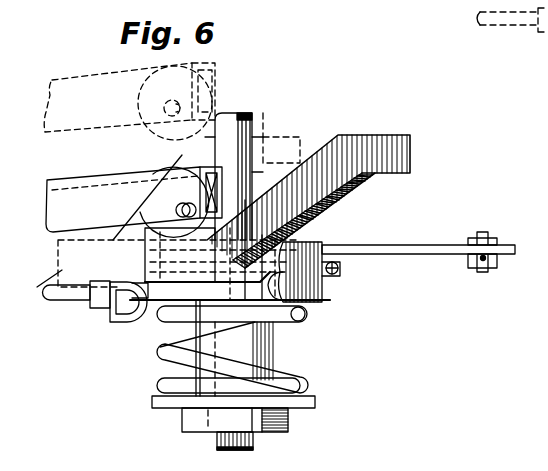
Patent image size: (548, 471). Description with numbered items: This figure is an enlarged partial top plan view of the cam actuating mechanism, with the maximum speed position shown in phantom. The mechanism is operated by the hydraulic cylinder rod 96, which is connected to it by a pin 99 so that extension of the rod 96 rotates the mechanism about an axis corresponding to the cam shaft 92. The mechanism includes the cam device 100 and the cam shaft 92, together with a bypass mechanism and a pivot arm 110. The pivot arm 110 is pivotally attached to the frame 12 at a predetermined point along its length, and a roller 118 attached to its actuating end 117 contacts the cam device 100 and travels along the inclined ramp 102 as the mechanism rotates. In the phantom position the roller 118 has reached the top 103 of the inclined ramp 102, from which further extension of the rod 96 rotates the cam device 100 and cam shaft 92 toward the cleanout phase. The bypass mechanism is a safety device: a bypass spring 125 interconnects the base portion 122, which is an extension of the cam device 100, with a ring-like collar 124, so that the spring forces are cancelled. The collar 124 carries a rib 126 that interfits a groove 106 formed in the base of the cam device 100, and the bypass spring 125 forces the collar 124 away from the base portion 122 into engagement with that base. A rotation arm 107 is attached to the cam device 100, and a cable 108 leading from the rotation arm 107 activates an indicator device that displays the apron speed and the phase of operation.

The frame 12 is at (539, 118).
The cam shaft 92 is at (246, 449).
The hydraulic cylinder rod 96 is at (512, 25).
The pin 99 is at (140, 320).
The cam device 100 is at (332, 237).
The inclined ramp 102 is at (313, 152).
The top of the inclined ramp 103 is at (265, 135).
The groove 106 is at (338, 264).
The rotation arm 107 is at (440, 245).
The cable 108 is at (497, 262).
The pivot arm 110 is at (94, 72).
The actuating end 117 is at (215, 62).
The roller 118 is at (140, 100).
The base portion 122 is at (318, 400).
The collar 124 is at (125, 282).
The bypass spring 125 is at (306, 382).
The rib 126 is at (333, 300).